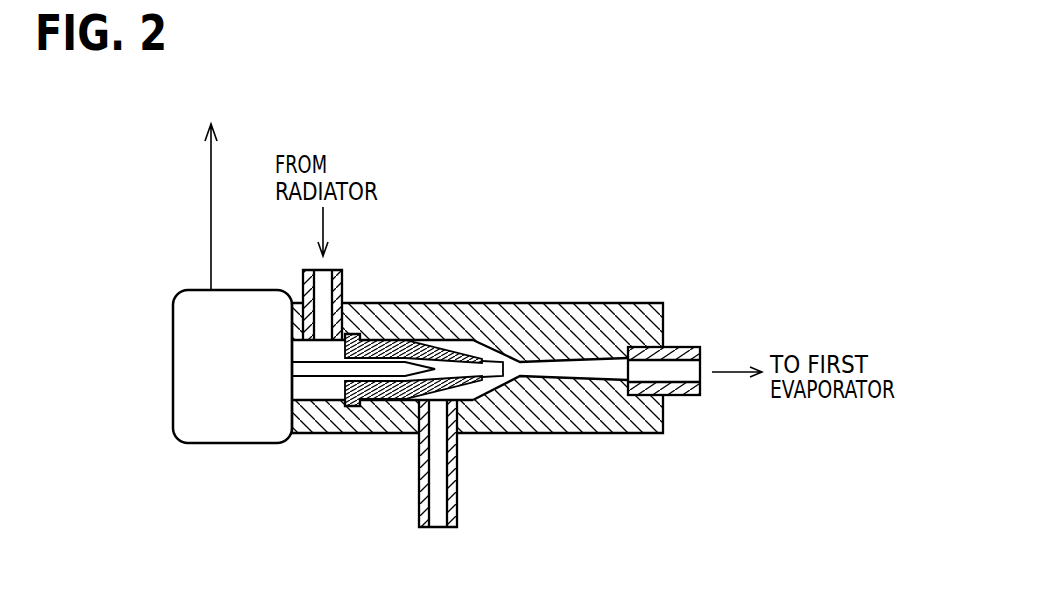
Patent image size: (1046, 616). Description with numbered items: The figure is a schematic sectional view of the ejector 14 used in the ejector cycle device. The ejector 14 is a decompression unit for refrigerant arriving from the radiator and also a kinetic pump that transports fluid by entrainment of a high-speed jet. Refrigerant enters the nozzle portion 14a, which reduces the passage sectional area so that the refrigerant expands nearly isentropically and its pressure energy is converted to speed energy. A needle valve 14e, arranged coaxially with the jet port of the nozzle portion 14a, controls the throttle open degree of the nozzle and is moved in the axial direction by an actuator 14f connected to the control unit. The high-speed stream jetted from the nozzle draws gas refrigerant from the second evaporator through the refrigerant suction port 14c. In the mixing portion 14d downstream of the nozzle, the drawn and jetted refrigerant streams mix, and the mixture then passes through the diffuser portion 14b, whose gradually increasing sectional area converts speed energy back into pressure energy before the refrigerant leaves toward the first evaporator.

The ejector 14 is at (559, 293).
The nozzle portion 14a is at (478, 343).
The diffuser portion 14b is at (597, 368).
The refrigerant suction port 14c is at (438, 520).
The mixing portion 14d is at (533, 370).
The needle valve 14e is at (378, 384).
The actuator 14f is at (250, 288).